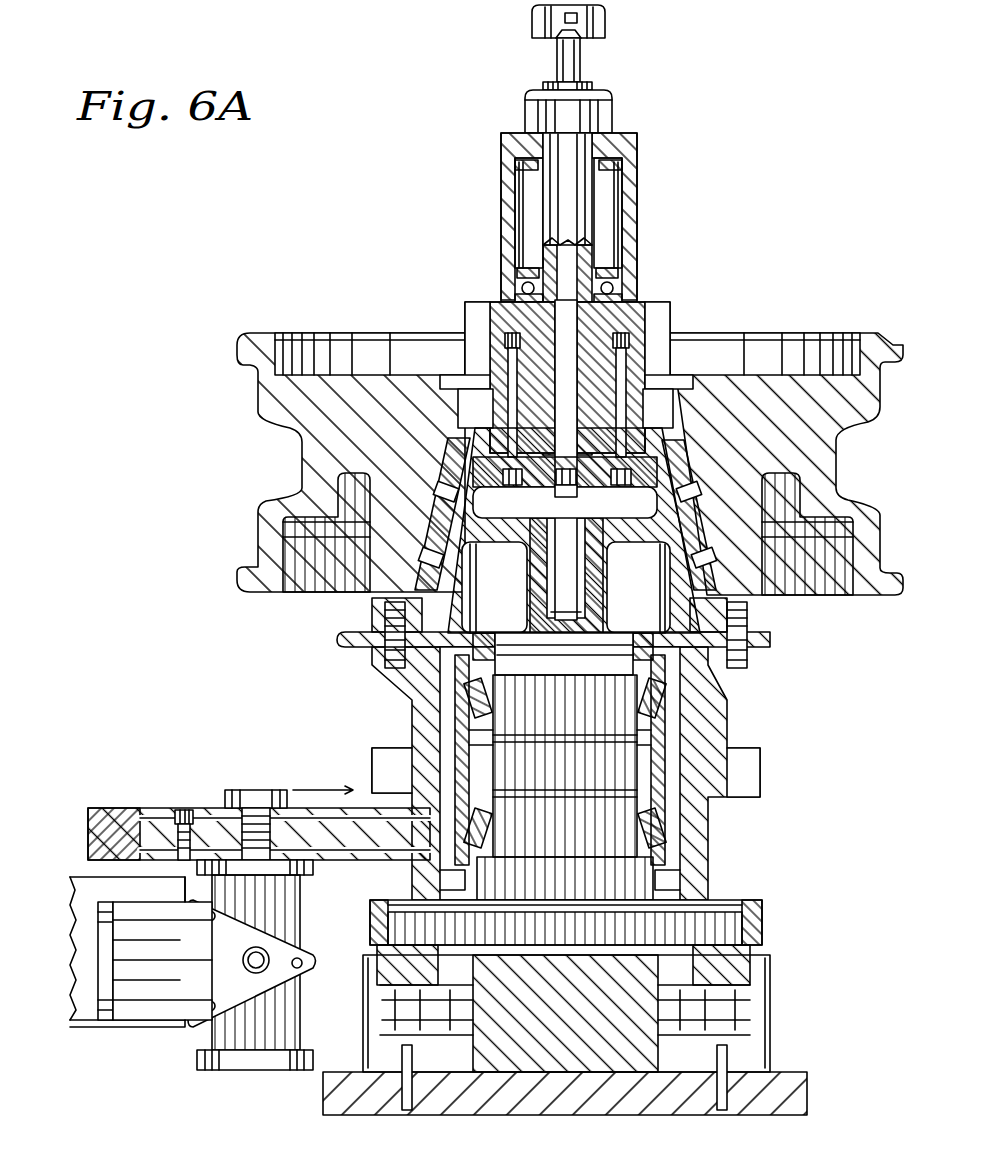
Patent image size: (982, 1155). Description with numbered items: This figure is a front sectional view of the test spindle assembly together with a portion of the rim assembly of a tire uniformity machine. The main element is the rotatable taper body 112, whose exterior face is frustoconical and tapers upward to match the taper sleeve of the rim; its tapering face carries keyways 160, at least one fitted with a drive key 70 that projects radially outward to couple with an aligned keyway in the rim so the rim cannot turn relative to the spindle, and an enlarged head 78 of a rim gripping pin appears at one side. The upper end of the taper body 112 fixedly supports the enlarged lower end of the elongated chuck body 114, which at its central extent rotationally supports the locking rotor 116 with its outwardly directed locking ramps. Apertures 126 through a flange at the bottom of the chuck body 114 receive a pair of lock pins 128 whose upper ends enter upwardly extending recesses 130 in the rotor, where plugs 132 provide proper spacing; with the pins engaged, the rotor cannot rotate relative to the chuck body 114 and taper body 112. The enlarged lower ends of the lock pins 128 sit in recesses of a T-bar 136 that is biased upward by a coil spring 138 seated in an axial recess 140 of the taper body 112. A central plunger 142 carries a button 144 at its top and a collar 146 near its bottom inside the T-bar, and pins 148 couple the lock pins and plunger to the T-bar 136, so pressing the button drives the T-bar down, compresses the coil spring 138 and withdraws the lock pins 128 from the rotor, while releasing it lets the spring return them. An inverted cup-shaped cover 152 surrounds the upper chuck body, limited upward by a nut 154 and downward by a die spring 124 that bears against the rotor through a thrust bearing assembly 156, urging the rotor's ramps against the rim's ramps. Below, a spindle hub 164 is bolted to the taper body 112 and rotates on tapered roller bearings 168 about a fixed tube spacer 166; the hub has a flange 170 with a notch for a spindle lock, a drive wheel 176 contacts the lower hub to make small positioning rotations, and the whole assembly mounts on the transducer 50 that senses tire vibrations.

The transducer 50 is at (645, 1042).
The drive key 70 is at (690, 468).
The enlarged head 78 is at (92, 830).
The taper body 112 is at (768, 640).
The chuck body 114 is at (600, 228).
The locking rotor 116 is at (672, 318).
The die spring 124 is at (610, 262).
The apertures 126 is at (478, 416).
The lock pins 128 is at (478, 380).
The recesses 130 is at (468, 340).
The plugs 132 is at (490, 322).
The T-bar 136 is at (498, 520).
The coil spring 138 is at (580, 612).
The axial recess 140 is at (548, 588).
The plunger 142 is at (556, 52).
The button 144 is at (608, 20).
The collar 146 is at (580, 485).
The pins 148 is at (565, 487).
The cover 152 is at (636, 158).
The nut 154 is at (614, 108).
The thrust bearing assembly 156 is at (626, 280).
The keyways 160 is at (698, 515).
The spindle hub 164 is at (745, 742).
The tube spacer 166 is at (662, 780).
The roller bearings 168 is at (682, 700).
The flange 170 is at (372, 770).
The drive wheel 176 is at (205, 805).